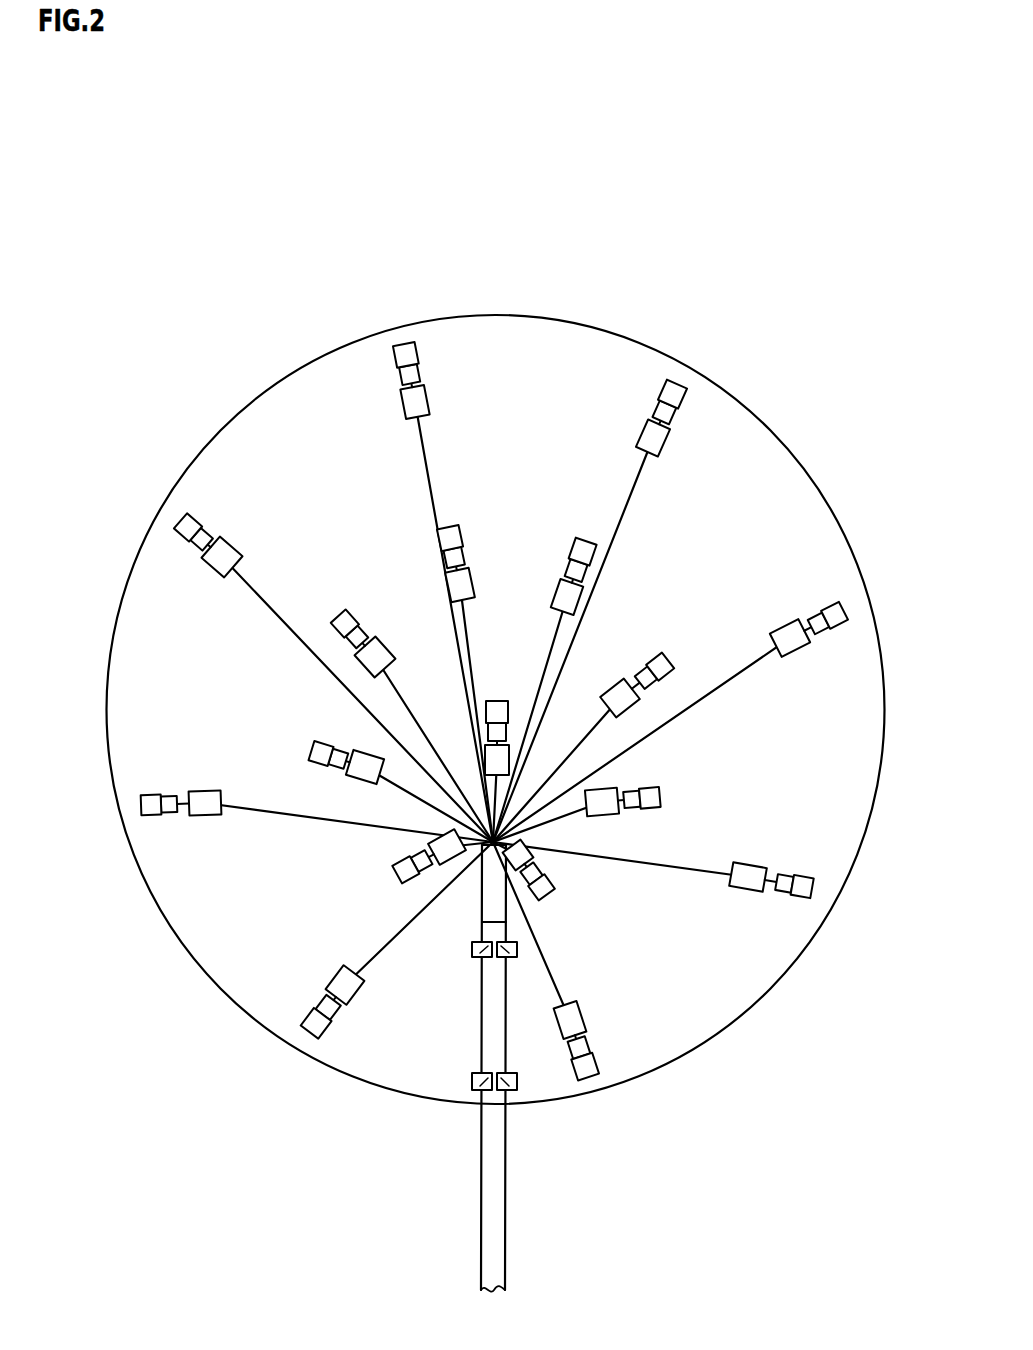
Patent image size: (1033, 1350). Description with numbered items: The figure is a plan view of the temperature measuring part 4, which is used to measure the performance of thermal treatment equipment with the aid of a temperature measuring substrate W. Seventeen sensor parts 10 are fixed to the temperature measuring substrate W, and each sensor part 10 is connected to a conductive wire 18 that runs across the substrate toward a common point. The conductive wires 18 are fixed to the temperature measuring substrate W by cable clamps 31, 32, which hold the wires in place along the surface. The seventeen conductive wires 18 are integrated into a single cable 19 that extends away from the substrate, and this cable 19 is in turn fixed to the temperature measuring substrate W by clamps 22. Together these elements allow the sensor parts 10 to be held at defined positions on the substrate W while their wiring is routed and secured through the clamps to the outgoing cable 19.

The temperature measuring part 4 is at (723, 310).
The sensor part 10 is at (183, 522).
The conductive wire 18 is at (272, 598).
The cable 19 is at (490, 1207).
The clamp 22 is at (480, 958).
The cable clamp 31 is at (410, 404).
The cable clamp 32 is at (488, 890).
The temperature measuring substrate W is at (838, 805).